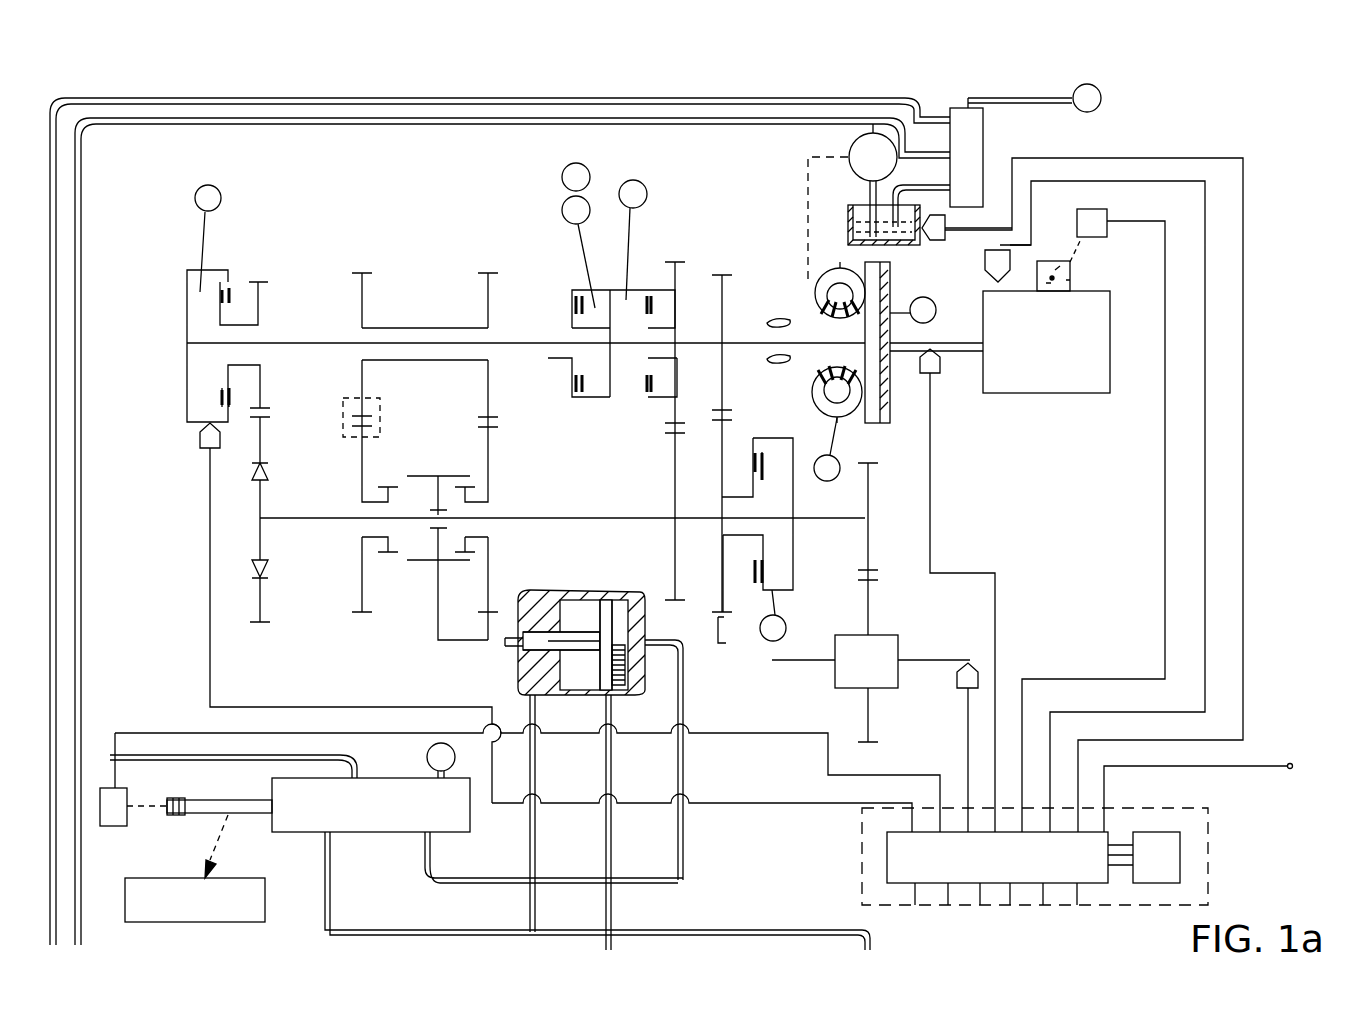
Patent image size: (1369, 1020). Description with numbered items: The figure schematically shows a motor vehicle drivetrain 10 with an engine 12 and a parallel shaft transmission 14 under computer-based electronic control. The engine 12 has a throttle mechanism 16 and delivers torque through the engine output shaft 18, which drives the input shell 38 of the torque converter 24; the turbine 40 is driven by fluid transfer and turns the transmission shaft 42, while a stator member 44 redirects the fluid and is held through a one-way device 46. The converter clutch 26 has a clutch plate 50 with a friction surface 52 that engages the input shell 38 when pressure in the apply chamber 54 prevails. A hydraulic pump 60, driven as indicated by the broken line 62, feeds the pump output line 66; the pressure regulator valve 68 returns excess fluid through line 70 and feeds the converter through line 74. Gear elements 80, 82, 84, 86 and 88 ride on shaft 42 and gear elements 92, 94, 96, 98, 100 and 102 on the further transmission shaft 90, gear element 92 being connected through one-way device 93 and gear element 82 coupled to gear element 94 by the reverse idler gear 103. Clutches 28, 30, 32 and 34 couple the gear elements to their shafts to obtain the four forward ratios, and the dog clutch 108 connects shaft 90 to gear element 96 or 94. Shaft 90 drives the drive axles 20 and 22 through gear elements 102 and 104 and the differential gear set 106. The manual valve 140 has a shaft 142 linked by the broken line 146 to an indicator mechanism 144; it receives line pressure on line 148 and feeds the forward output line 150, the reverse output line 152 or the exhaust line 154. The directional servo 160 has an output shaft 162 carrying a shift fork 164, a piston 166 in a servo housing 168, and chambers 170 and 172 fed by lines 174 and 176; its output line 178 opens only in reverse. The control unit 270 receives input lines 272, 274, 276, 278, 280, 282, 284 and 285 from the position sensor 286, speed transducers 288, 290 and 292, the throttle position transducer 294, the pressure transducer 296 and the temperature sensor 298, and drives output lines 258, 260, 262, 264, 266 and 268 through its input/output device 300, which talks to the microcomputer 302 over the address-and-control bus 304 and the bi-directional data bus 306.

The motor vehicle drivetrain 10 is at (283, 197).
The engine 12 is at (1050, 393).
The parallel shaft transmission 14 is at (167, 377).
The throttle mechanism 16 is at (1072, 272).
The engine output shaft 18 is at (952, 342).
The drive axle 20 is at (812, 662).
The drive axle 22 is at (945, 660).
The torque converter 24 is at (803, 225).
The torque converter clutch 26 is at (895, 299).
The clutch 28 is at (187, 322).
The clutch 30 is at (572, 290).
The clutch 32 is at (795, 530).
The clutch 34 is at (648, 290).
The input shell 38 is at (848, 418).
The turbine 40 is at (818, 398).
The transmission shaft 42 is at (738, 333).
The stator member 44 is at (820, 371).
The one-way device 46 is at (832, 322).
The clutch plate 50 is at (870, 418).
The friction surface 52 is at (885, 402).
The apply chamber 54 is at (887, 340).
The hydraulic pump 60 is at (848, 152).
The broken line 62 is at (808, 180).
The pump output line 66 is at (640, 122).
The pressure regulator valve 68 is at (995, 162).
The line 70 is at (945, 185).
The line 74 is at (383, 104).
The gear element 80 is at (262, 314).
The gear element 82 is at (362, 300).
The gear element 84 is at (488, 293).
The gear element 86 is at (685, 290).
The gear element 88 is at (737, 313).
The transmission shaft 90 is at (530, 517).
The gear element 92 is at (258, 578).
The one-way device 93 is at (270, 472).
The gear element 94 is at (360, 580).
The gear element 96 is at (488, 585).
The gear element 98 is at (676, 538).
The gear element 100 is at (728, 644).
The gear element 102 is at (868, 545).
The reverse idler gear 103 is at (385, 410).
The gear element 104 is at (868, 612).
The differential gear set 106 is at (890, 650).
The dog clutch 108 is at (433, 540).
The manual valve 140 is at (383, 820).
The shaft 142 is at (238, 807).
The indicator mechanism 144 is at (265, 893).
The mechanical linkage 146 is at (207, 840).
The line 148 is at (237, 757).
The forward output line 150 is at (333, 903).
The reverse output line 152 is at (447, 882).
The exhaust line 154 is at (430, 778).
The directional servo 160 is at (518, 658).
The output shaft 162 is at (513, 620).
The shift fork 164 is at (440, 605).
The piston 166 is at (578, 598).
The servo housing 168 is at (518, 683).
The chamber 170 is at (556, 595).
The chamber 172 is at (635, 620).
The line 174 is at (535, 815).
The line 176 is at (688, 852).
The output line 178 is at (612, 742).
The output line 258 is at (912, 895).
The output line 260 is at (948, 905).
The output line 262 is at (980, 897).
The output line 264 is at (1010, 900).
The output line 266 is at (1043, 900).
The output line 268 is at (1077, 898).
The control unit 270 is at (1208, 858).
The input line 272 is at (828, 750).
The input line 274 is at (880, 805).
The input line 276 is at (968, 755).
The input line 278 is at (997, 598).
The input line 280 is at (1165, 545).
The input line 282 is at (1203, 410).
The input line 284 is at (1243, 470).
The input line 285 is at (1243, 766).
The position sensor 286 is at (120, 738).
The speed transducer 288 is at (205, 448).
The speed transducer 290 is at (975, 680).
The speed transducer 292 is at (935, 385).
The position transducer 294 is at (1103, 207).
The pressure transducer 296 is at (1000, 268).
The temperature sensor 298 is at (954, 245).
The input/output device 300 is at (903, 860).
The microcomputer 302 is at (1165, 835).
The address-and-control bus 304 is at (1118, 845).
The bi-directional data bus 306 is at (1155, 883).